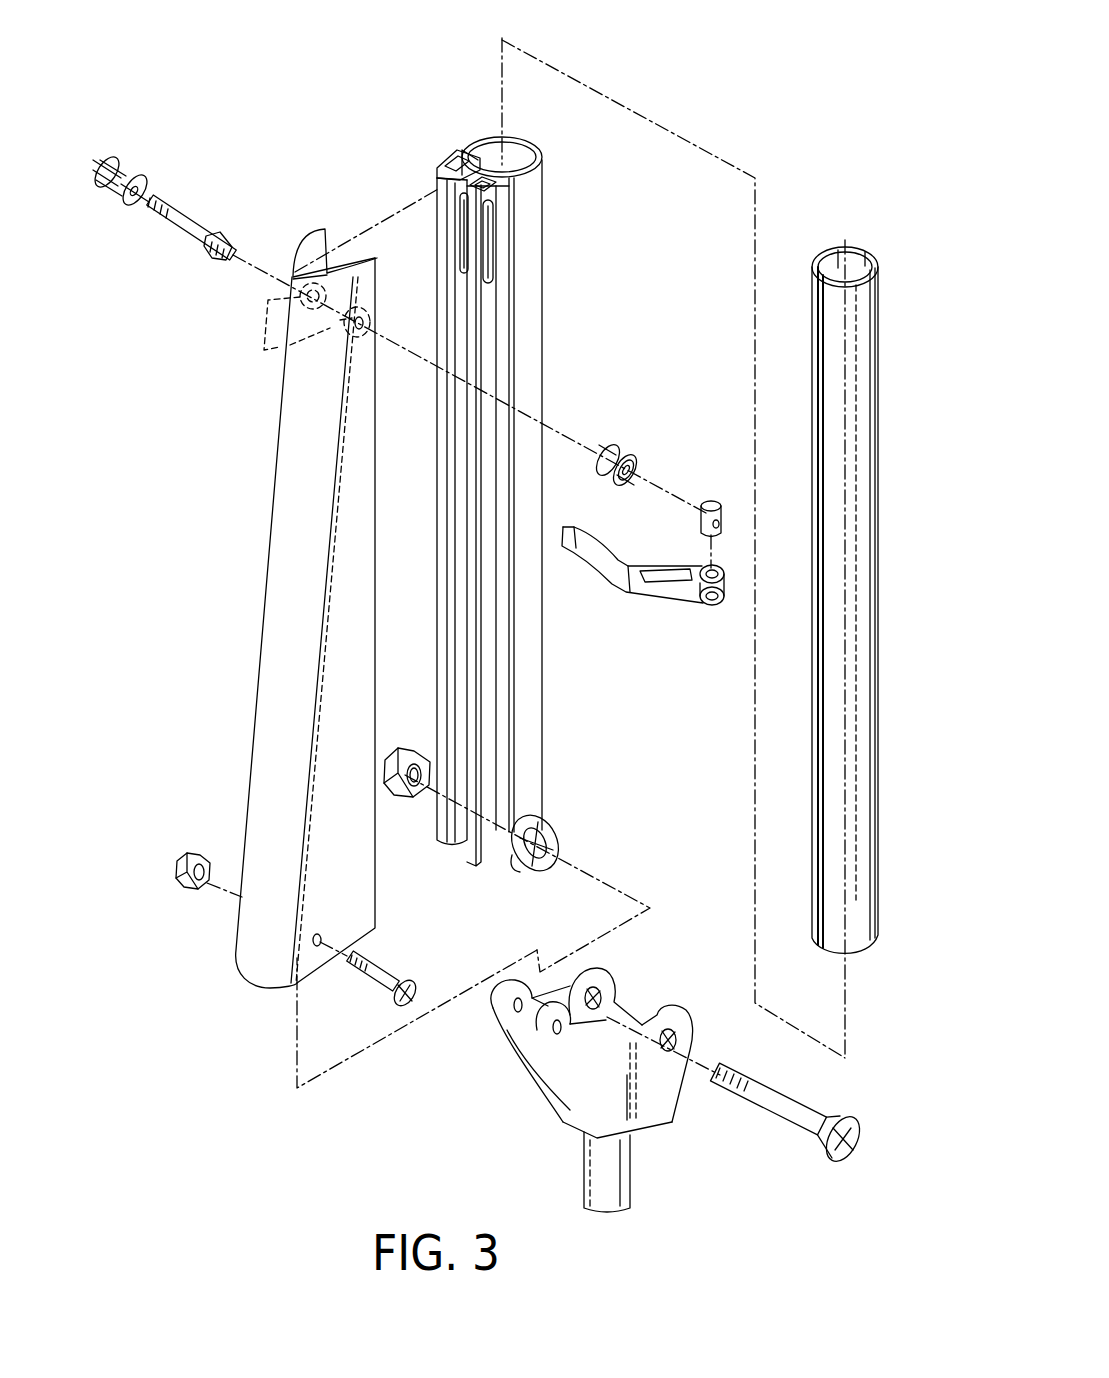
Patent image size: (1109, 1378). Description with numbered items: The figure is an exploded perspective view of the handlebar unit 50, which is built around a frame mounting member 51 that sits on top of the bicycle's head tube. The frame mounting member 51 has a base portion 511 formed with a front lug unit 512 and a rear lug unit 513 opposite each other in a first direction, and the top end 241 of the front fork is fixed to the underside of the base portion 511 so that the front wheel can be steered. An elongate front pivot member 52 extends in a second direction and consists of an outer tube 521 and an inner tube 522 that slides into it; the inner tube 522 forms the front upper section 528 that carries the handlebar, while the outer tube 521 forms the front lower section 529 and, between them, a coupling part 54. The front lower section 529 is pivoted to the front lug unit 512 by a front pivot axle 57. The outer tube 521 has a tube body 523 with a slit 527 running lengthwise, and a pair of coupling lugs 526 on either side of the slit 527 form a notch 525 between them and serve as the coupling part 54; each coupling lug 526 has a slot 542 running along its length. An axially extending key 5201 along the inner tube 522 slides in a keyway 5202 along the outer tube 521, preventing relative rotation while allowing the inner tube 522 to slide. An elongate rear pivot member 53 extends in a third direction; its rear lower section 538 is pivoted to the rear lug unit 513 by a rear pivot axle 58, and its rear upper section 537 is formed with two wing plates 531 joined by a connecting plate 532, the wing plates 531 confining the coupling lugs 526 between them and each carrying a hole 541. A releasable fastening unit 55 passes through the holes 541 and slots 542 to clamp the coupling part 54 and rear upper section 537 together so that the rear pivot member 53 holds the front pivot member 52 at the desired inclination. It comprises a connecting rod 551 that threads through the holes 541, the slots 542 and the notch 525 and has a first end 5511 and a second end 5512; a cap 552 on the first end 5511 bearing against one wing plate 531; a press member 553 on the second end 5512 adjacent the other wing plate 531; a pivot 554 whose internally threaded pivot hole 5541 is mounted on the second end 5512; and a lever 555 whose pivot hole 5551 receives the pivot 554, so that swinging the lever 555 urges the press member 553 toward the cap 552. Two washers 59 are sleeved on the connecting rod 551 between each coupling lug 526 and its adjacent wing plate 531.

The handlebar unit 50 is at (845, 577).
The frame mounting member 51 is at (588, 1048).
The front pivot member 52 is at (644, 474).
The rear pivot member 53 is at (285, 604).
The coupling part 54 is at (493, 220).
The releasable fastening unit 55 is at (420, 398).
The front pivot axle 57 is at (770, 1097).
The rear pivot axle 58 is at (382, 973).
The washers 59 is at (292, 332).
The top end of the front fork 241 is at (623, 1193).
The base portion 511 is at (563, 1125).
The front lug unit 512 is at (690, 1030).
The rear lug unit 513 is at (530, 1065).
The outer tube 521 is at (542, 730).
The inner tube 522 is at (868, 873).
The tube body 523 is at (533, 178).
The notch 525 is at (432, 173).
The coupling lugs 526 is at (440, 237).
The slit 527 is at (452, 167).
The front upper section 528 is at (825, 248).
The front lower section 529 is at (490, 847).
The wing plates 531 is at (307, 233).
The connecting plate 532 is at (292, 280).
The rear upper section 537 is at (337, 283).
The rear lower section 538 is at (248, 970).
The holes 541 is at (370, 307).
The slots 542 is at (462, 250).
The connecting rod 551 is at (187, 233).
The cap 552 is at (93, 200).
The press member 553 is at (605, 438).
The pivot 554 is at (700, 510).
The lever 555 is at (657, 593).
The key 5201 is at (818, 337).
The keyway 5202 is at (492, 137).
The first end of the connecting rod 5511 is at (152, 196).
The second end of the connecting rod 5512 is at (218, 237).
The internally threaded pivot hole 5541 is at (725, 523).
The pivot hole 5551 is at (723, 607).